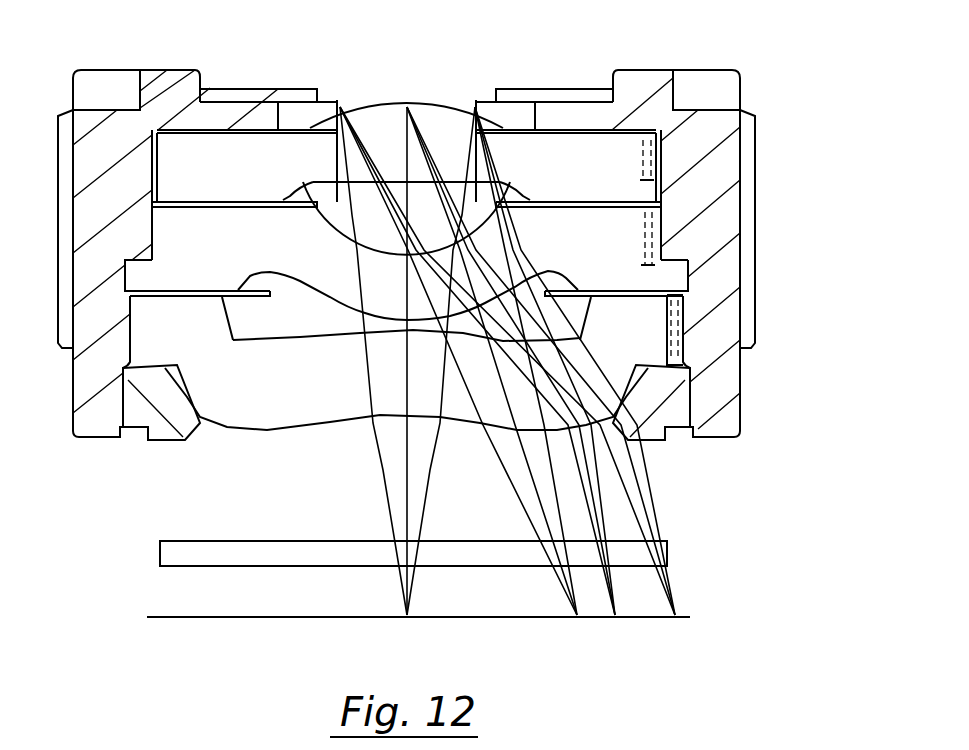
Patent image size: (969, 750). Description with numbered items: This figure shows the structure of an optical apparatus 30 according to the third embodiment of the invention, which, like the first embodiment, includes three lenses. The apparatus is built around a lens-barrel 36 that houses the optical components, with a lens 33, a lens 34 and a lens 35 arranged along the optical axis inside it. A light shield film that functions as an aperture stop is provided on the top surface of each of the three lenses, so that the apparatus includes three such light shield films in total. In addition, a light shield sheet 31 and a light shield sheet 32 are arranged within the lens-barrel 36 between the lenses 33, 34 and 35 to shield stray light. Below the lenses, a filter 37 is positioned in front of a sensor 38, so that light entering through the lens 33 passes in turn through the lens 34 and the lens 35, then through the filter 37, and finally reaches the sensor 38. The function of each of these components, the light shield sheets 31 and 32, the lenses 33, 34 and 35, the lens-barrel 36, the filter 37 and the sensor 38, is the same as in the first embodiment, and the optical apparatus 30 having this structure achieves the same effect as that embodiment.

The optical apparatus 30 is at (431, 307).
The light shield sheet 31 is at (283, 200).
The light shield sheet 32 is at (208, 292).
The lens 33 is at (513, 147).
The lens 34 is at (533, 213).
The lens 35 is at (266, 427).
The lens-barrel 36 is at (740, 413).
The filter 37 is at (160, 557).
The sensor 38 is at (212, 618).